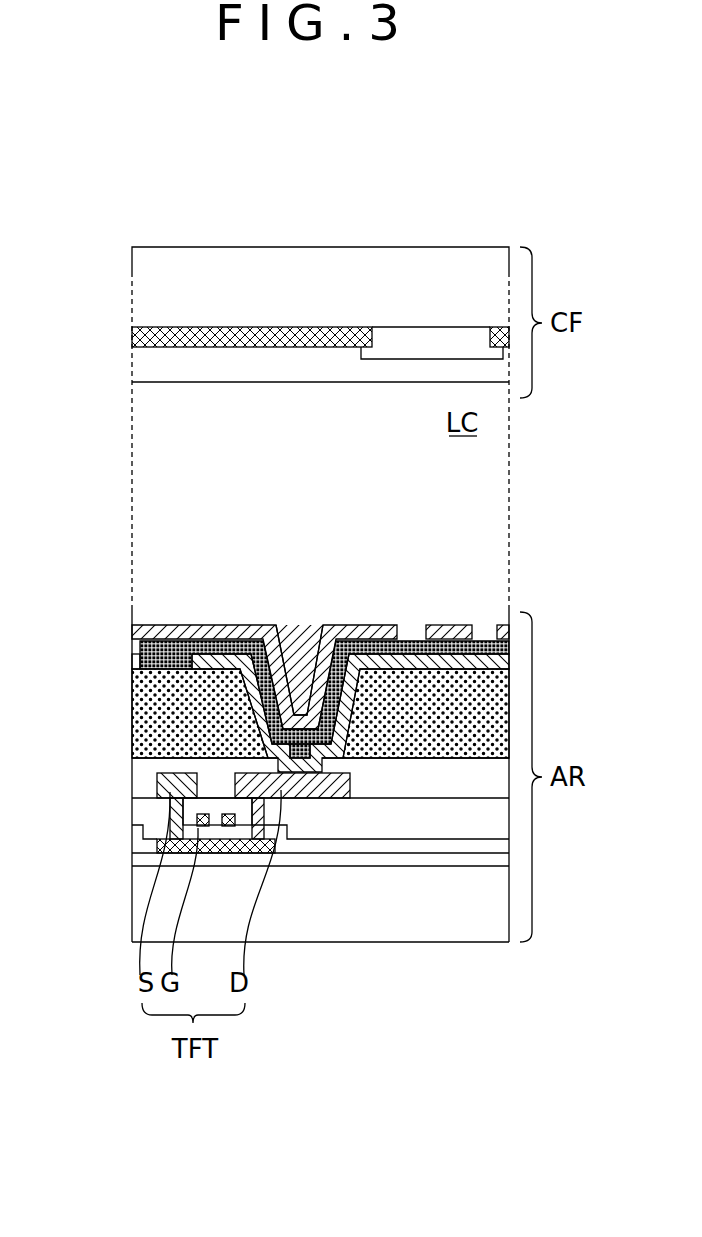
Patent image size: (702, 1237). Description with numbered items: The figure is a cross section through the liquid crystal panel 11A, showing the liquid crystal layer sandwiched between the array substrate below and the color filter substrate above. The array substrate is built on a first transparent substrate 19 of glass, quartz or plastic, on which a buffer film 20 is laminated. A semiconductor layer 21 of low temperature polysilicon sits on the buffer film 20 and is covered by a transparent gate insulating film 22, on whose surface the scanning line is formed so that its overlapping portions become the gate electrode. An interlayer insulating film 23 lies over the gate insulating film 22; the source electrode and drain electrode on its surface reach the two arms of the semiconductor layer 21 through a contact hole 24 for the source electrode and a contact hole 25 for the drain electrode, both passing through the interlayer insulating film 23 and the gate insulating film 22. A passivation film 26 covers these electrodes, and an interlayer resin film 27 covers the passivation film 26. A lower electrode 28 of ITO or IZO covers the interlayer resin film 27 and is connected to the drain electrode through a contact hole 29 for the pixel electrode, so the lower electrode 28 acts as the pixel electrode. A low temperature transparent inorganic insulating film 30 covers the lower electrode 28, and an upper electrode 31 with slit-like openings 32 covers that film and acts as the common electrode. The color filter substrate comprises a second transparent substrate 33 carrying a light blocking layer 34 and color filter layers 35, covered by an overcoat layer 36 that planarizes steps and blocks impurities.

The liquid crystal panel 11A is at (93, 146).
The second transparent substrate 33 is at (220, 273).
The light blocking layer 34 is at (341, 320).
The color filter layer 35 is at (408, 337).
The overcoat layer 36 is at (280, 368).
The upper electrode 31 is at (147, 625).
The slit-like opening 32 is at (409, 630).
The contact hole for pixel electrode 29 is at (300, 705).
The transparent inorganic insulating film 30 is at (205, 647).
The lower electrode 28 is at (247, 663).
The interlayer resin film 27 is at (137, 718).
The passivation film 26 is at (481, 776).
The interlayer insulating film 23 is at (302, 827).
The contact hole for source electrode 24 is at (178, 830).
The contact hole for drain electrode 25 is at (253, 833).
The semiconductor layer 21 is at (207, 830).
The gate insulating film 22 is at (334, 848).
The buffer film 20 is at (387, 860).
The first transparent substrate 19 is at (435, 913).